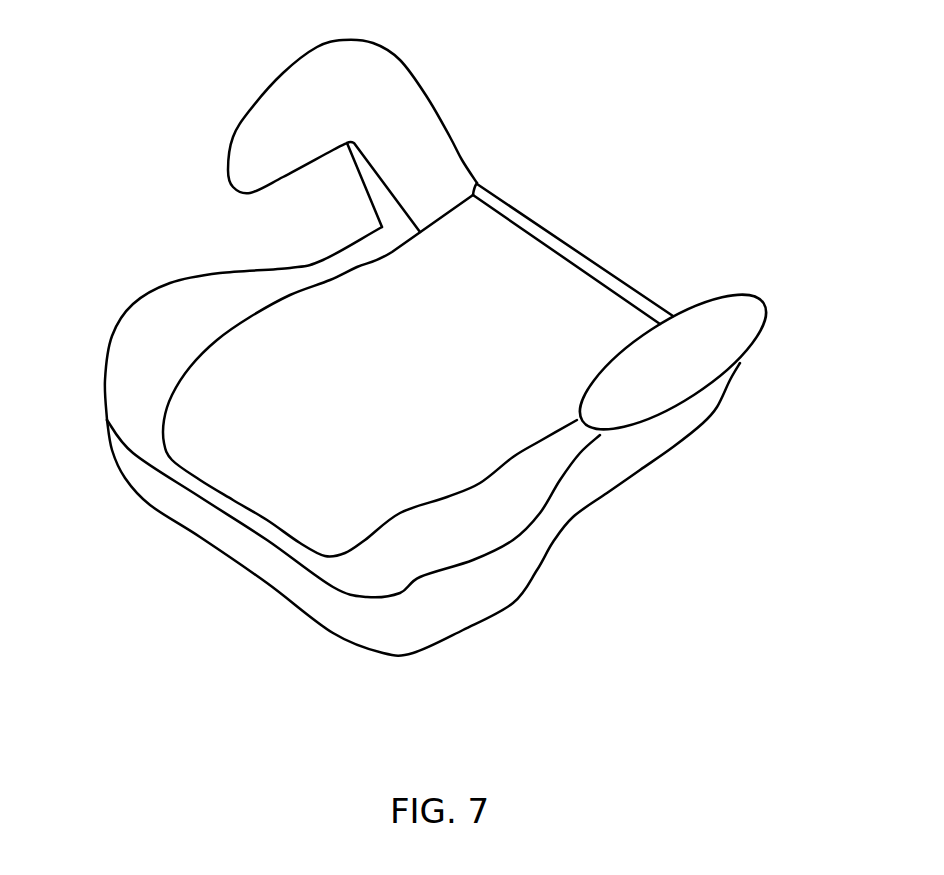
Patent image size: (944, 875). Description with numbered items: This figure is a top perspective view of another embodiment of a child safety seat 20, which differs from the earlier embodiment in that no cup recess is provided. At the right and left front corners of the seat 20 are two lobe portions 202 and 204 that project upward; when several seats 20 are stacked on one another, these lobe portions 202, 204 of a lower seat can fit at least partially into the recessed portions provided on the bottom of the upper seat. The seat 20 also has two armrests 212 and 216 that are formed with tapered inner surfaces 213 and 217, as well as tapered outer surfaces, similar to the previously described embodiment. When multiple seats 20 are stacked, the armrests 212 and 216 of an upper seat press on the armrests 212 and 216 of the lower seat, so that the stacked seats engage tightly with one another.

The child safety seat 20 is at (673, 87).
The lobe portion 202 is at (162, 328).
The lobe portion 204 is at (457, 525).
The armrest 212 is at (242, 83).
The tapered inner surface 213 is at (402, 92).
The armrest 216 is at (717, 347).
The tapered inner surface 217 is at (633, 342).